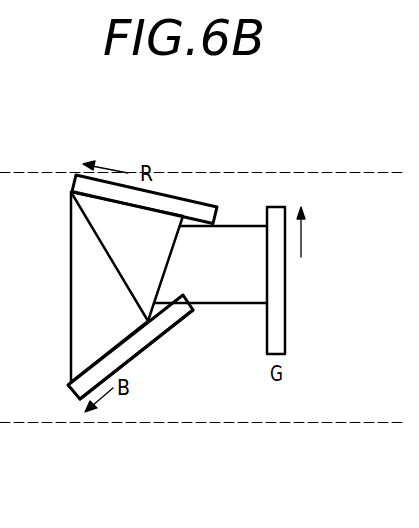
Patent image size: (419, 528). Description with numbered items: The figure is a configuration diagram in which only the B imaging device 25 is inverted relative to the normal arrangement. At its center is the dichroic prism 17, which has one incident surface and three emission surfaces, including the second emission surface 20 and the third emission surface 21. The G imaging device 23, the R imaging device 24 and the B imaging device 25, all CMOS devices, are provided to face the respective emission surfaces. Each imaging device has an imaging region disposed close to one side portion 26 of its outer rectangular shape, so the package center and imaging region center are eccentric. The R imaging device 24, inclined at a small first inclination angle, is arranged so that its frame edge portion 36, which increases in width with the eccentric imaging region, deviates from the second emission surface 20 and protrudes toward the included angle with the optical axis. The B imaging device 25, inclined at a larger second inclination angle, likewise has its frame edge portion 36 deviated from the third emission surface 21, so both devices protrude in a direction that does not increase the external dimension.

The dichroic prism 17 is at (64, 207).
The second emission surface 20 is at (157, 207).
The third emission surface 21 is at (125, 343).
The G imaging device 23 is at (285, 320).
The R imaging device 24 is at (195, 200).
The B imaging device 25 is at (153, 342).
The one side portion 26 is at (76, 177).
The frame edge portion 36 is at (191, 227).